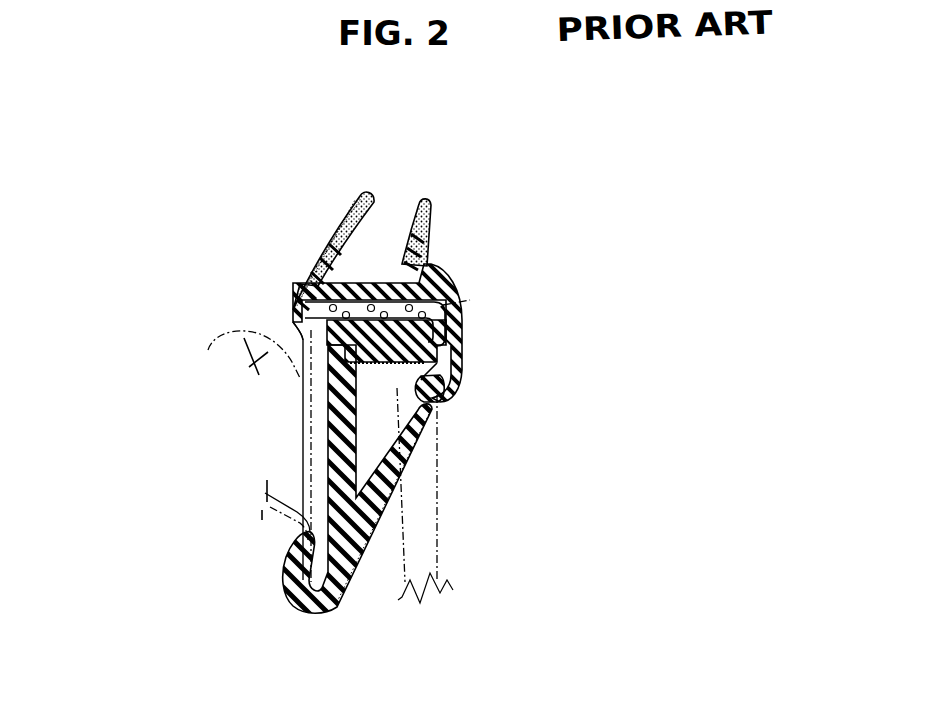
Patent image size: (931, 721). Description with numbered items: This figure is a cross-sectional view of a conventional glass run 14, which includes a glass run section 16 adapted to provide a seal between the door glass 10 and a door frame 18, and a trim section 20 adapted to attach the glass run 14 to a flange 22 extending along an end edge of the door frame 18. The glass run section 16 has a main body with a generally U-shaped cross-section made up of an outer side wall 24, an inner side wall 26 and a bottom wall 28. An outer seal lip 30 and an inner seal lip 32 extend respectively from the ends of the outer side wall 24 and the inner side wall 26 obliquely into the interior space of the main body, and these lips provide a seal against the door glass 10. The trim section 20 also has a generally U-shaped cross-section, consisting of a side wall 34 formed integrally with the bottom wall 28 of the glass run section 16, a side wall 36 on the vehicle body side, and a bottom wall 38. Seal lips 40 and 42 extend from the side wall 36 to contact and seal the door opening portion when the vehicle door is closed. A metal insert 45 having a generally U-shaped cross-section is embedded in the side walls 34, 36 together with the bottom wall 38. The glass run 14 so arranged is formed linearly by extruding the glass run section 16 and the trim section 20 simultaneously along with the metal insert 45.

The door glass 10 is at (440, 526).
The glass run 14 is at (472, 260).
The glass run section 16 is at (328, 427).
The door frame 18 is at (210, 348).
The trim section 20 is at (379, 283).
The flange 22 is at (443, 304).
The outer side wall 24 is at (453, 368).
The inner side wall 26 is at (330, 459).
The bottom wall 28 is at (425, 355).
The outer seal lip 30 is at (440, 402).
The inner seal lip 32 is at (395, 487).
The side wall 34 is at (313, 323).
The side wall 36 is at (318, 286).
The bottom wall 38 is at (460, 327).
The seal lip 40 is at (433, 214).
The seal lip 42 is at (350, 280).
The metal insert 45 is at (447, 313).